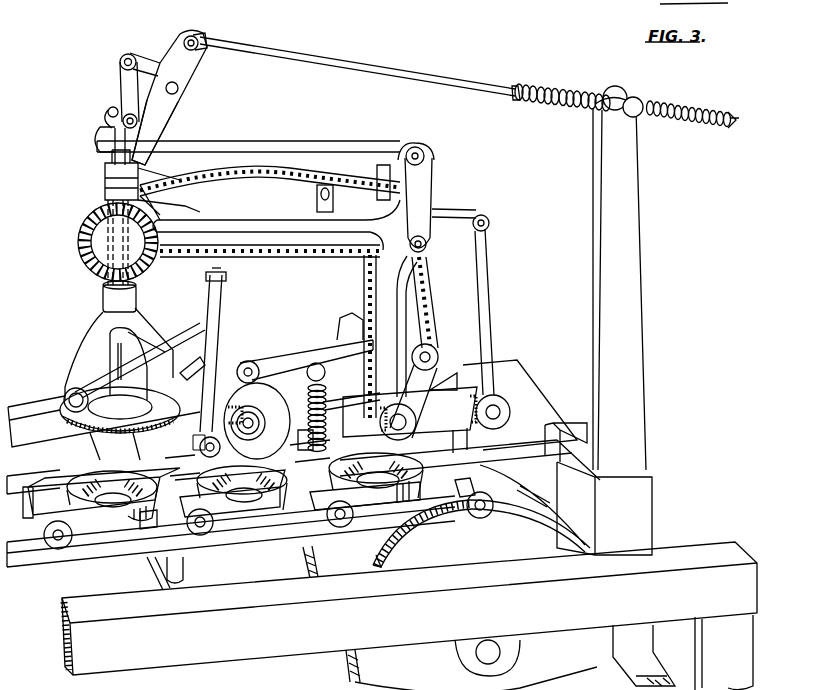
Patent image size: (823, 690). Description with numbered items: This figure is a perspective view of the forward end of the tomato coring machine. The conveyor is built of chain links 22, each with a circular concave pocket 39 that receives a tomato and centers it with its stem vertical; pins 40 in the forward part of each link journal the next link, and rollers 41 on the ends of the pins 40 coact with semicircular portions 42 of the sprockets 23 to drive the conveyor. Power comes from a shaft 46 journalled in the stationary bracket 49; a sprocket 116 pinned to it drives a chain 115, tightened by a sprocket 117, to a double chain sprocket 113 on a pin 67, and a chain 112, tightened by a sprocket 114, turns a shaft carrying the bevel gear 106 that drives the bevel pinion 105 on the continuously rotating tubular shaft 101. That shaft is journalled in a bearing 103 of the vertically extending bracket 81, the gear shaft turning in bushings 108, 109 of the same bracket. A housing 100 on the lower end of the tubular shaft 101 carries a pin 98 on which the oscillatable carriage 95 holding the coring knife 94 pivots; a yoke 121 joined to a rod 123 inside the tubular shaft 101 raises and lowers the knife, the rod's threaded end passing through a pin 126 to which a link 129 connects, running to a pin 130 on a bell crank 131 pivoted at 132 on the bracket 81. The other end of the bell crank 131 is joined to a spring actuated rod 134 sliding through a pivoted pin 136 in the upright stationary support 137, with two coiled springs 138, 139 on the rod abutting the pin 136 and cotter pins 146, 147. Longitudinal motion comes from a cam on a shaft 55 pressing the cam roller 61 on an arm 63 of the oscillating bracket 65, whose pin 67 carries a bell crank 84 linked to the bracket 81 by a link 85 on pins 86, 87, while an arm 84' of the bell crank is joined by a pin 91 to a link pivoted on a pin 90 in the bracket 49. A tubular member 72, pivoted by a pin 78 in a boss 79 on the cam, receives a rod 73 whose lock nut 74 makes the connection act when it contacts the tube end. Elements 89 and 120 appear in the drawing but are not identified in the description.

The chain link 22 is at (303, 560).
The sprocket 23 is at (563, 540).
The circular concave pocket 39 is at (125, 502).
The pin 40 is at (207, 513).
The roller 41 is at (253, 512).
The semicircular portion 42 is at (380, 567).
The shaft 46 is at (366, 481).
The bracket 49 is at (455, 373).
The shaft 55 is at (195, 369).
The cam roller 61 is at (240, 360).
The arm 63 is at (307, 360).
The oscillating bracket 65 is at (390, 300).
The pin 67 is at (427, 252).
The tubular member 72 is at (236, 329).
The rod 73 is at (233, 265).
The lock nut 74 is at (206, 280).
The pin 78 is at (232, 448).
The boss 79 is at (198, 441).
The vertically extending bracket 81 is at (157, 123).
The bell crank 84 is at (447, 200).
The arm 84' is at (469, 198).
The link 85 is at (263, 148).
The pin 86 is at (440, 132).
The pin 87 is at (100, 157).
The bar 89 is at (489, 268).
The pin 90 is at (512, 405).
The pin 91 is at (490, 222).
The coring knife 94 is at (150, 380).
The oscillatable carriage 95 is at (97, 377).
The pin 98 is at (68, 395).
The housing 100 is at (74, 326).
The tubular shaft 101 is at (107, 245).
The bearing 103 is at (105, 178).
The bevel pinion 105 is at (157, 182).
The bevel gear 106 is at (80, 230).
The bushing 108 is at (110, 428).
The bushing 109 is at (300, 358).
The chain 112 is at (230, 174).
The double chain sprocket 113 is at (377, 197).
The sprocket 114 is at (312, 193).
The chain 115 is at (430, 312).
The sprocket 116 is at (420, 410).
The sprocket 117 is at (447, 318).
The pivot 120 is at (196, 40).
The yoke 121 is at (127, 352).
The rod 123 is at (100, 142).
The pin 126 is at (107, 115).
The link 129 is at (128, 80).
The pin 130 is at (131, 57).
The bell crank 131 is at (193, 77).
The pivot 132 is at (176, 92).
The spring actuated rod 134 is at (332, 60).
The pin 136 is at (640, 100).
The upright stationary support 137 is at (633, 380).
The spring 138 is at (560, 88).
The spring 139 is at (693, 107).
The cotter pin 146 is at (507, 80).
The cotter pin 147 is at (732, 132).